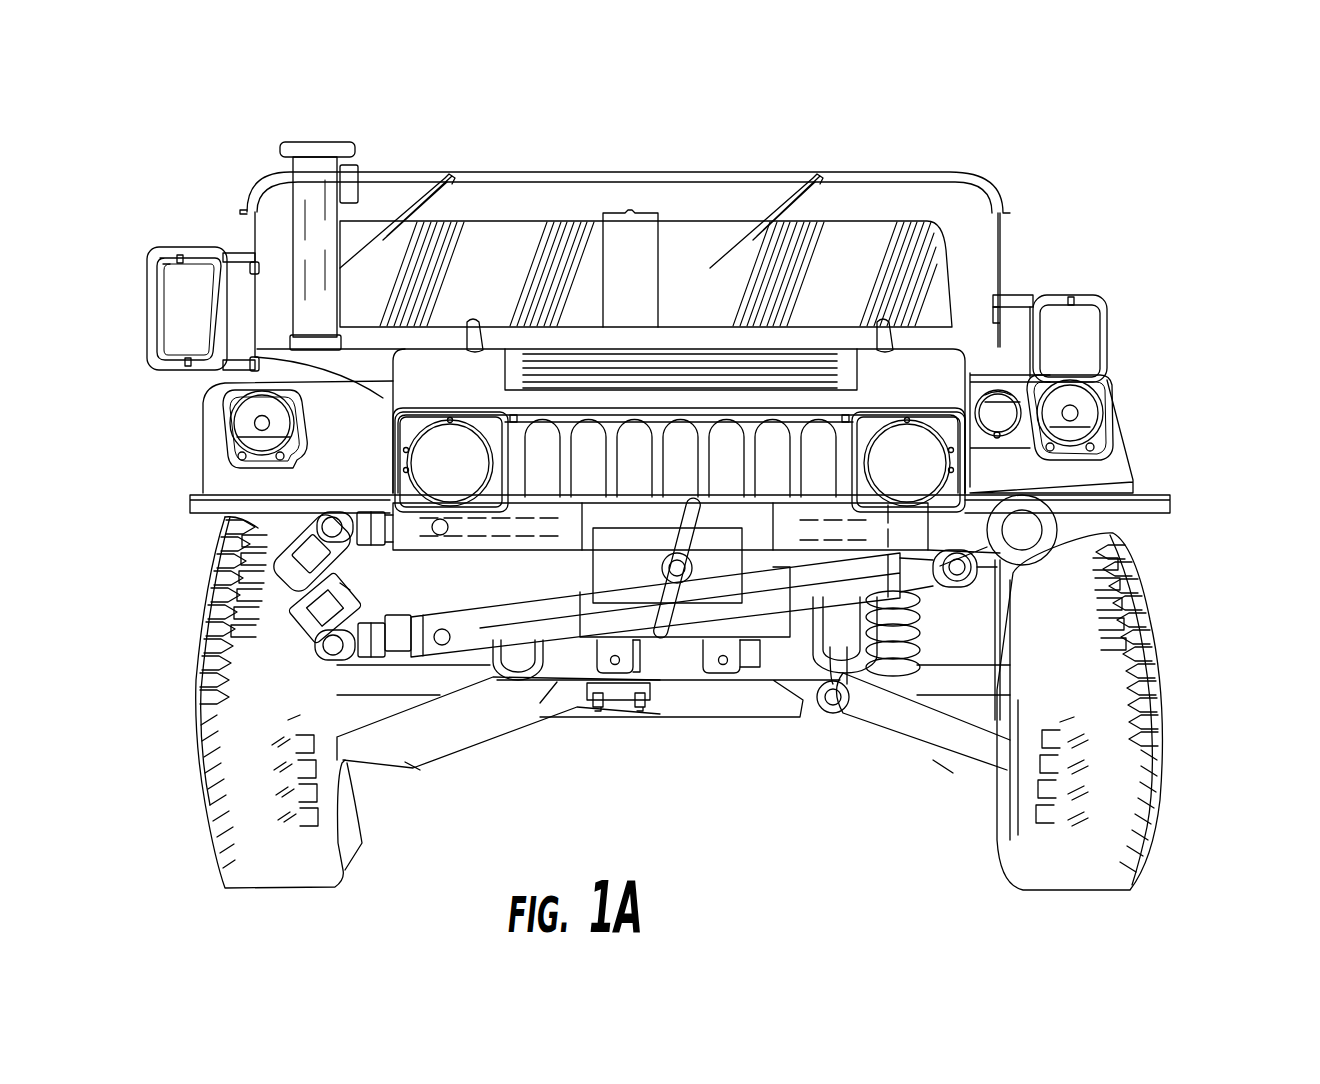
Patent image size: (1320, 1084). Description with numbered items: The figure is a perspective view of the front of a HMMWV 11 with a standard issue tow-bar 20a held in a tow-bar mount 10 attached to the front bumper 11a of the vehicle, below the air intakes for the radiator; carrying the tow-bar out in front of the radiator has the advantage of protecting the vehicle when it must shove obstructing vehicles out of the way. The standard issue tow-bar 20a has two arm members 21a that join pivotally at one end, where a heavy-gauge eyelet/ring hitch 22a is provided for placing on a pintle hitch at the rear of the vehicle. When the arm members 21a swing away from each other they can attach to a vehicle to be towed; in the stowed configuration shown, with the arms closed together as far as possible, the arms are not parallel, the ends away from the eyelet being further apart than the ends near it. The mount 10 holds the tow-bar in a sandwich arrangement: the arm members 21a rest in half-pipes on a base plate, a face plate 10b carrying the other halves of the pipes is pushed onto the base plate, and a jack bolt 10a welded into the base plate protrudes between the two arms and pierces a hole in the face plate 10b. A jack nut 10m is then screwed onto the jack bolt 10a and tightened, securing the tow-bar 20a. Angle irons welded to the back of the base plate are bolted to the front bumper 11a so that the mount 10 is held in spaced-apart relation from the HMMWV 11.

The HMMWV 11 is at (1034, 110).
The tow-bar mount 10 is at (739, 620).
The jack bolt 10a is at (706, 500).
The face plate 10b is at (737, 548).
The jack nut 10m is at (600, 598).
The front bumper 11a is at (657, 663).
The arm members 21a is at (420, 527).
The eyelet/ring hitch 22a is at (1097, 548).
The standard issue tow-bar 20a is at (984, 602).